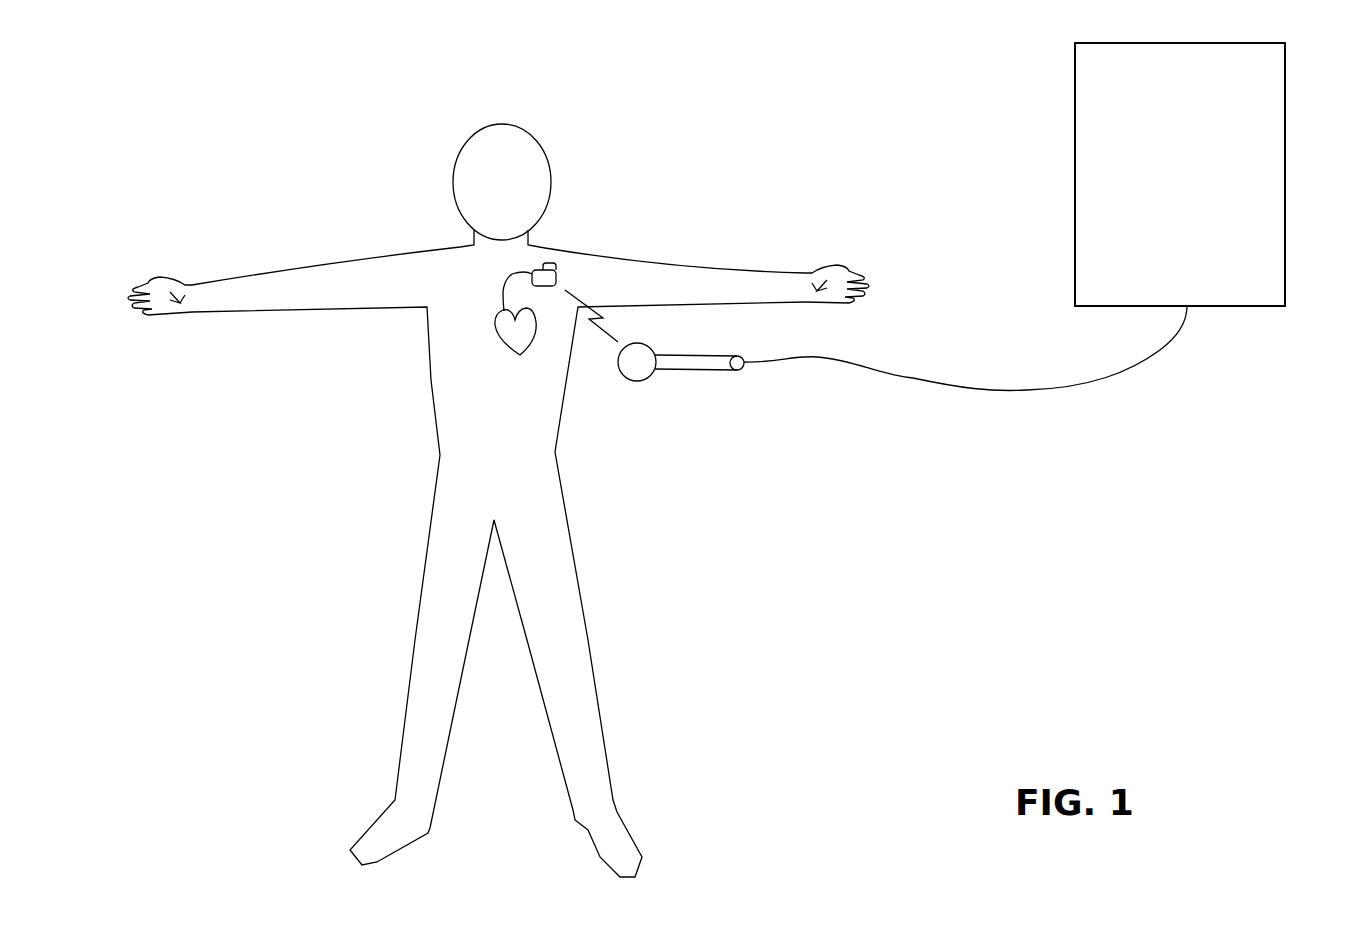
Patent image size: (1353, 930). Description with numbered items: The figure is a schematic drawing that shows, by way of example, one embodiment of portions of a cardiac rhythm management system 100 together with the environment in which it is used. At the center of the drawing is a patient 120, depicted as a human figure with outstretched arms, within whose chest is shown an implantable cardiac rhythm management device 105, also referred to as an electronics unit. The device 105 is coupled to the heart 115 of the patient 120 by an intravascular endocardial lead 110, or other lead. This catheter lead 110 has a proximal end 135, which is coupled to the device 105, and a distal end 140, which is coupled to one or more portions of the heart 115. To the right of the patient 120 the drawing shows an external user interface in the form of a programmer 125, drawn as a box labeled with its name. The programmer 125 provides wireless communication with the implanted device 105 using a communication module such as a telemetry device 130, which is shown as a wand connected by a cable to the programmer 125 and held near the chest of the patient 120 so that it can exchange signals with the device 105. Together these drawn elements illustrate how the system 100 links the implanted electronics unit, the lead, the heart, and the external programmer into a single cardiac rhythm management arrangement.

The cardiac rhythm management system 100 is at (902, 563).
The implantable cardiac rhythm management device 105 is at (557, 276).
The intravascular endocardial lead 110 is at (505, 287).
The heart 115 is at (507, 346).
The patient 120 is at (434, 403).
The programmer 125 is at (1288, 268).
The telemetry device 130 is at (638, 381).
The proximal end 135 is at (534, 266).
The distal end 140 is at (500, 308).